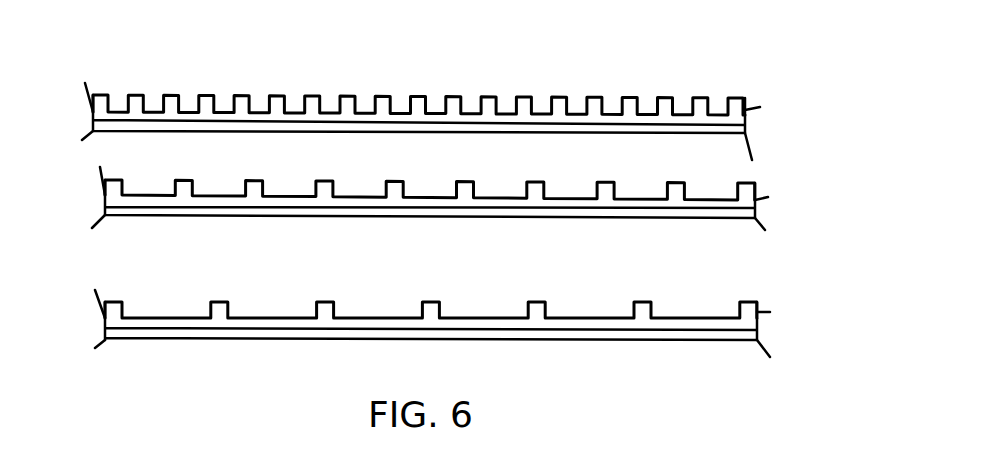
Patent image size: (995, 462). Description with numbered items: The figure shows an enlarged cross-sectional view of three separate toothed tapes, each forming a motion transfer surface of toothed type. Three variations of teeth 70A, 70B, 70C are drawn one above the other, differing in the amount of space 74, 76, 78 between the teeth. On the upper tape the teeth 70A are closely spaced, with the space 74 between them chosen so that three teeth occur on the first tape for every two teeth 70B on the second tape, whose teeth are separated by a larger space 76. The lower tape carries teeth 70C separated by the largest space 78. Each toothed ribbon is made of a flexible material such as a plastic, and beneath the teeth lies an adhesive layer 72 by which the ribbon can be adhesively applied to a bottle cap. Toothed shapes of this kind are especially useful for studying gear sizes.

The space between teeth 74 is at (635, 79).
The space between teeth 76 is at (635, 180).
The space between teeth 78 is at (693, 293).
The teeth 70A is at (745, 108).
The teeth 70B is at (757, 193).
The teeth 70C is at (760, 302).
The adhesive layer 72 is at (745, 133).